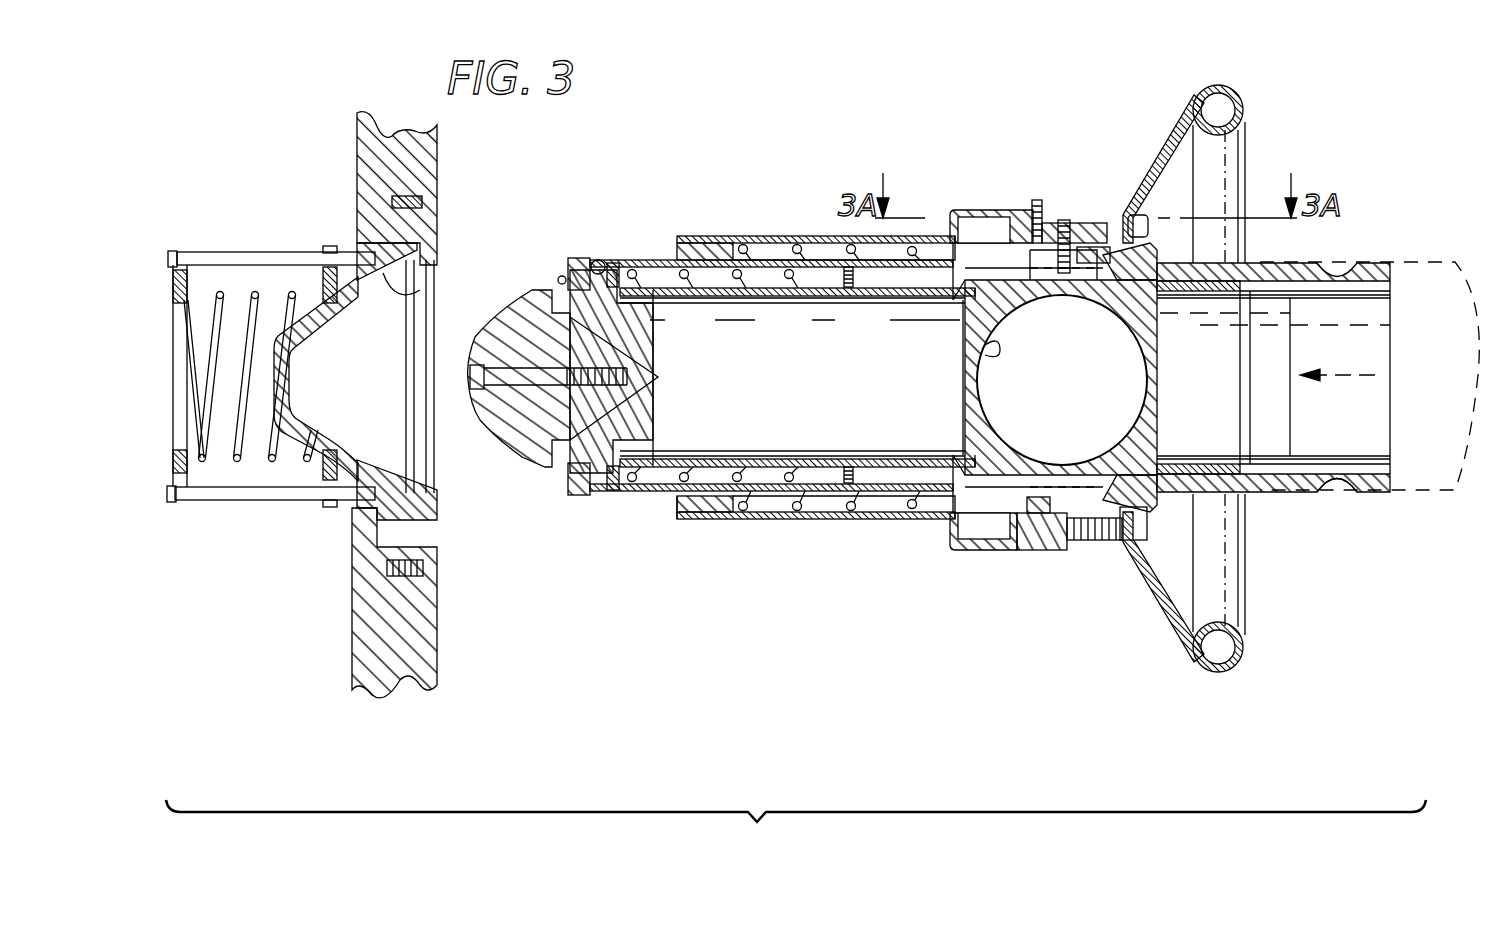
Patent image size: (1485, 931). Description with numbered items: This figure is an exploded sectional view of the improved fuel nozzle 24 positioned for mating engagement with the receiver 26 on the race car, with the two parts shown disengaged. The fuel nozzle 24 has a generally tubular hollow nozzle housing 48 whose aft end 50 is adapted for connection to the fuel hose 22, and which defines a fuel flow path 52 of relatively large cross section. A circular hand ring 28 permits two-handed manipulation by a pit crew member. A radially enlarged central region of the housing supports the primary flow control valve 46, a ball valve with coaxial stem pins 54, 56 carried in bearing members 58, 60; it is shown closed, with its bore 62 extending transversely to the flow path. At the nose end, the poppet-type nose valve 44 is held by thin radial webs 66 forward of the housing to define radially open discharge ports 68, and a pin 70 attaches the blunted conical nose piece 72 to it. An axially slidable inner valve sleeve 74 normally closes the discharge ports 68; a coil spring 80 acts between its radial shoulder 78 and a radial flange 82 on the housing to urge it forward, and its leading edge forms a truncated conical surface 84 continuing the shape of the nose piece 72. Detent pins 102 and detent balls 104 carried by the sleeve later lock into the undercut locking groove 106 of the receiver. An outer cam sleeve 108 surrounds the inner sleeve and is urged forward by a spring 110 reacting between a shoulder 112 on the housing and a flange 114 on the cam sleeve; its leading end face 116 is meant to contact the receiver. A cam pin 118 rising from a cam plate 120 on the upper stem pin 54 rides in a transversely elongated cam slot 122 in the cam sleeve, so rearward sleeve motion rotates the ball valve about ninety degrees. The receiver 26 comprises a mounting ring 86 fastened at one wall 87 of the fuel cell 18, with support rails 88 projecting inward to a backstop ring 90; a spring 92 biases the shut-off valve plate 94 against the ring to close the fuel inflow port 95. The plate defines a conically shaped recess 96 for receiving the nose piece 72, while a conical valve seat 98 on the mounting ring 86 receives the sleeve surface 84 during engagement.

The fuel cell 18 is at (224, 170).
The fuel hose 22 is at (1400, 262).
The fuel nozzle 24 is at (858, 540).
The receiver 26 is at (298, 527).
The hand ring 28 is at (1245, 110).
The nose valve 44 is at (652, 410).
The primary flow control valve 46 is at (1157, 408).
The nozzle housing 48 is at (937, 468).
The aft end 50 is at (1370, 490).
The fuel flow path 52 is at (855, 418).
The stem pin 54 is at (1078, 270).
The stem pin 56 is at (1060, 530).
The bearing member 58 is at (1145, 235).
The bearing member 60 is at (1020, 540).
The bore 62 is at (985, 347).
The radial webs 66 is at (638, 305).
The discharge ports 68 is at (580, 470).
The pin 70 is at (625, 362).
The nose piece 72 is at (513, 330).
The inner valve sleeve 74 is at (640, 495).
The radial shoulder 78 is at (615, 263).
The coil spring 80 is at (745, 288).
The radial flange 82 is at (873, 290).
The truncated conical surface 84 is at (580, 258).
The mounting ring 86 is at (385, 530).
The wall 87 is at (362, 130).
The support rails 88 is at (263, 252).
The backstop ring 90 is at (175, 275).
The spring 92 is at (225, 375).
The shut-off valve plate 94 is at (285, 445).
The fuel inflow port 95 is at (390, 450).
The conically shaped recess 96 is at (318, 330).
The conical valve seat 98 is at (395, 293).
The detent pins 102 is at (660, 322).
The detent balls 104 is at (598, 260).
The undercut locking groove 106 is at (395, 258).
The outer cam sleeve 108 is at (792, 236).
The spring 110 is at (935, 240).
The shoulder 112 is at (968, 548).
The flange 114 is at (724, 512).
The leading end face 116 is at (672, 508).
The cam pin 118 is at (1062, 218).
The cam plate 120 is at (1095, 223).
The cam slot 122 is at (1030, 207).